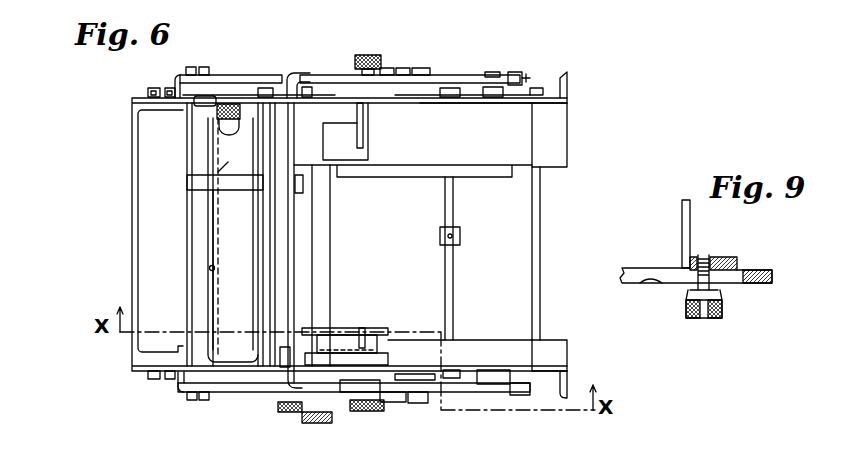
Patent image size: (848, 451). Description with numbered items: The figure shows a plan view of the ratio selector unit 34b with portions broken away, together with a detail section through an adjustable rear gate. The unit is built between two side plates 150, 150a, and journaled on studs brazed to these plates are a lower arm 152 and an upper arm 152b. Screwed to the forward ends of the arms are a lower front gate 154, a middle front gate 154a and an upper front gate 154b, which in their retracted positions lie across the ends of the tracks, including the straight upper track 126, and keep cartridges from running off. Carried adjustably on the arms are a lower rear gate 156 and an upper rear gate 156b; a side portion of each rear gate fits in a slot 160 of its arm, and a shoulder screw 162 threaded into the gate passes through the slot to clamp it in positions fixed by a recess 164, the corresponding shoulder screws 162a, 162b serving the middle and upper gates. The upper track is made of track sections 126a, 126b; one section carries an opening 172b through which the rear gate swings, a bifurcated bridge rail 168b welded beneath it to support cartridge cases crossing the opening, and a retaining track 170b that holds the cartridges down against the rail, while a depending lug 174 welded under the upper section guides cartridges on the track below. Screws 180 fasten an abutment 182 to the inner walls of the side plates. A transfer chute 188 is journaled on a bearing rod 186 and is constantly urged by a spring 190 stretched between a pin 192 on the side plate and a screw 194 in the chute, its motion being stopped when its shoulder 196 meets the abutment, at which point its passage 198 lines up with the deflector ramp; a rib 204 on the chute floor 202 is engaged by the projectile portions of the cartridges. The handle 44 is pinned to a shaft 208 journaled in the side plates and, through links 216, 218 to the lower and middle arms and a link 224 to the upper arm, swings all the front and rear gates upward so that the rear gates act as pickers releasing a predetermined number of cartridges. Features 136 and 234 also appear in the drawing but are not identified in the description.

In FIG. 6, the ratio selector unit 34b is at (199, 50).
In FIG. 6, the handle 44 is at (320, 424).
In FIG. 6, the upper track 126 is at (557, 176).
In FIG. 6, the upper track section 126a is at (567, 368).
In FIG. 6, the upper track section 126b is at (567, 135).
In FIG. 6, the frame flange 136 is at (567, 86).
In FIG. 6, the side plate 150 is at (540, 366).
In FIG. 6, the side plate 150a is at (520, 100).
In FIG. 6, the lower arm 152 is at (205, 87).
In FIG. 9, the lower arm 152 is at (772, 272).
In FIG. 6, the upper arm 152b is at (460, 80).
In FIG. 6, the lower front gate 154 is at (176, 78).
In FIG. 6, the middle front gate 154a is at (290, 262).
In FIG. 6, the upper front gate 154b is at (312, 68).
In FIG. 9, the lower rear gate 156 is at (690, 232).
In FIG. 6, the upper rear gate 156b is at (364, 132).
In FIG. 9, the slot 160 is at (743, 268).
In FIG. 6, the shoulder screw 162 is at (292, 408).
In FIG. 9, the shoulder screw 162 is at (722, 306).
In FIG. 6, the shoulder screw 162a is at (352, 411).
In FIG. 6, the shoulder screw 162b is at (370, 56).
In FIG. 9, the recess 164 is at (655, 285).
In FIG. 6, the bifurcated bridge rail 168b is at (322, 328).
In FIG. 6, the retaining track 170b is at (340, 345).
In FIG. 6, the opening 172b is at (337, 156).
In FIG. 6, the depending lug 174 is at (418, 172).
In FIG. 6, the screw 180 is at (146, 93).
In FIG. 6, the abutment 182 is at (132, 165).
In FIG. 6, the bearing rod 186 is at (220, 282).
In FIG. 6, the transfer chute 188 is at (190, 225).
In FIG. 6, the spring 190 is at (222, 100).
In FIG. 6, the pin 192 is at (205, 96).
In FIG. 6, the screw 194 is at (240, 122).
In FIG. 6, the shoulder 196 is at (187, 180).
In FIG. 6, the passage 198 is at (209, 268).
In FIG. 6, the floor 202 is at (239, 230).
In FIG. 6, the rib 204 is at (224, 178).
In FIG. 6, the shaft 208 is at (332, 216).
In FIG. 6, the link 216 is at (394, 70).
In FIG. 6, the link 218 is at (403, 378).
In FIG. 6, the link 224 is at (428, 76).
In FIG. 6, the channel 234 is at (194, 209).